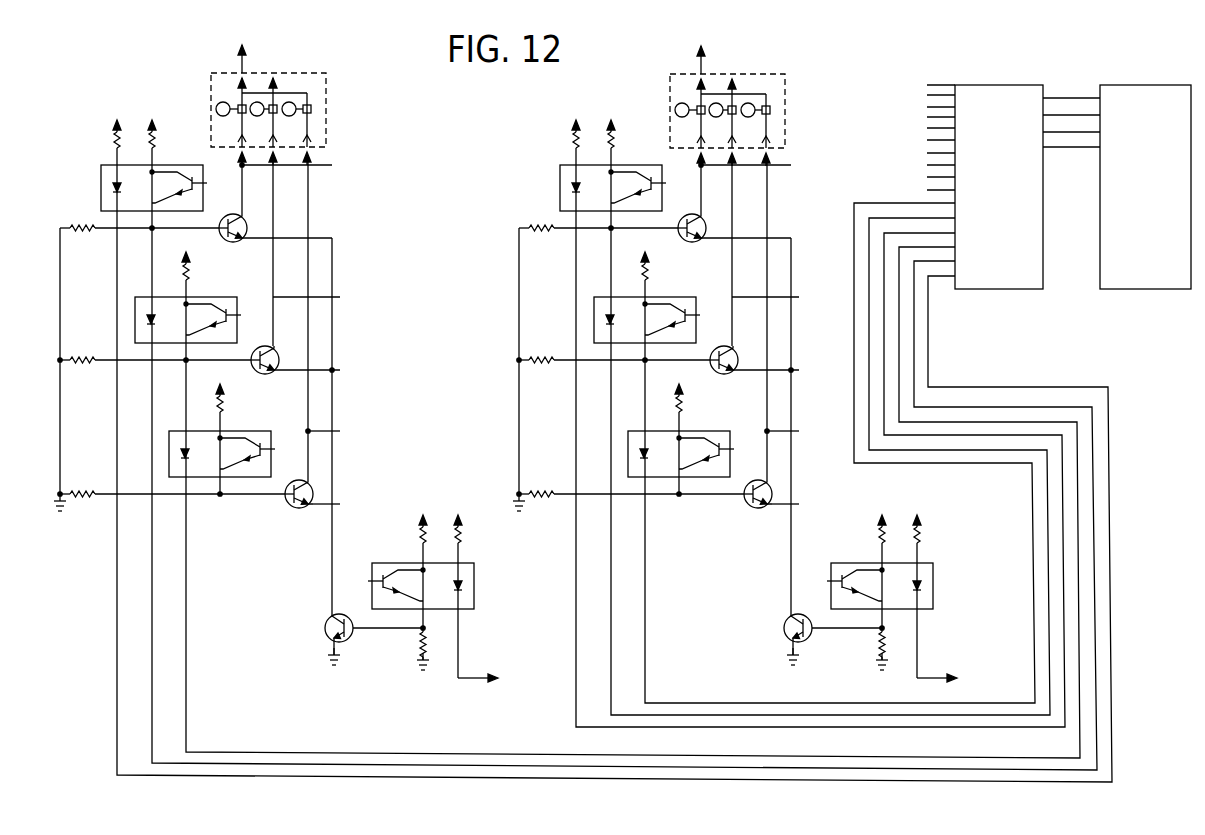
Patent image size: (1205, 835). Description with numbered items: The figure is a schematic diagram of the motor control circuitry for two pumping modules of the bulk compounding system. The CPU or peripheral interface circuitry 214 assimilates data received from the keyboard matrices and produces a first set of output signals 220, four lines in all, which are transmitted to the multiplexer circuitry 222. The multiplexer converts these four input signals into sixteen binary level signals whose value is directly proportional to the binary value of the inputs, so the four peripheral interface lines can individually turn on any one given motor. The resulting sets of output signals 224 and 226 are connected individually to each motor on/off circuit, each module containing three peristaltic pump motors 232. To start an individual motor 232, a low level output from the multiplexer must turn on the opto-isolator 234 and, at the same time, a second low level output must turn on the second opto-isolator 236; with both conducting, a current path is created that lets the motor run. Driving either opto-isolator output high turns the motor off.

The CPU interface circuitry 214 is at (1128, 85).
The first set of output signals 220 is at (1060, 96).
The multiplexer circuitry 222 is at (964, 85).
The set of output signals 224 is at (927, 153).
The set of output signals 226 is at (853, 265).
The motor 232 is at (282, 73).
The opto-isolator 234 is at (101, 184).
The second opto-isolator 236 is at (476, 582).